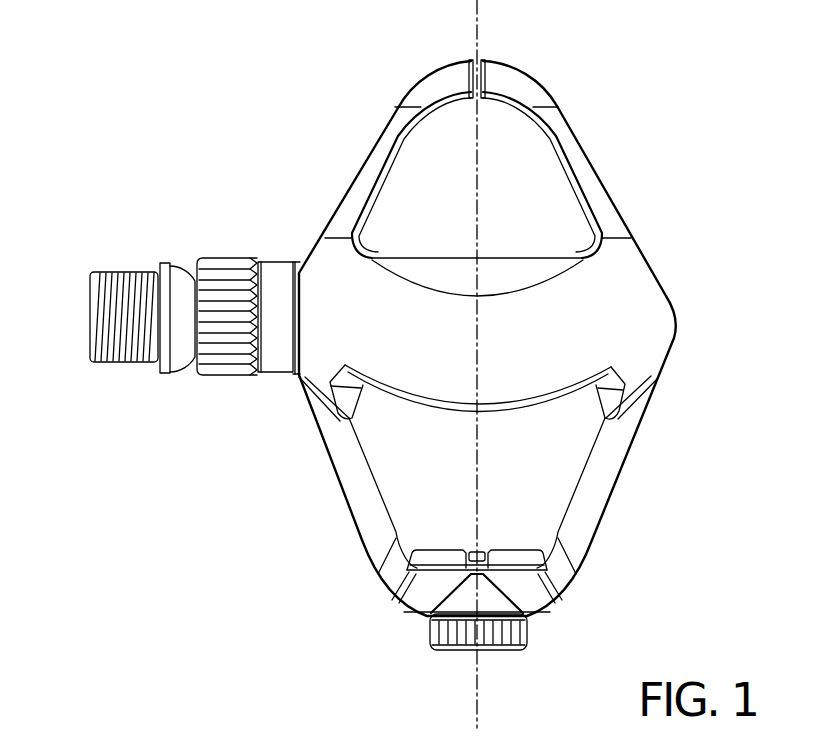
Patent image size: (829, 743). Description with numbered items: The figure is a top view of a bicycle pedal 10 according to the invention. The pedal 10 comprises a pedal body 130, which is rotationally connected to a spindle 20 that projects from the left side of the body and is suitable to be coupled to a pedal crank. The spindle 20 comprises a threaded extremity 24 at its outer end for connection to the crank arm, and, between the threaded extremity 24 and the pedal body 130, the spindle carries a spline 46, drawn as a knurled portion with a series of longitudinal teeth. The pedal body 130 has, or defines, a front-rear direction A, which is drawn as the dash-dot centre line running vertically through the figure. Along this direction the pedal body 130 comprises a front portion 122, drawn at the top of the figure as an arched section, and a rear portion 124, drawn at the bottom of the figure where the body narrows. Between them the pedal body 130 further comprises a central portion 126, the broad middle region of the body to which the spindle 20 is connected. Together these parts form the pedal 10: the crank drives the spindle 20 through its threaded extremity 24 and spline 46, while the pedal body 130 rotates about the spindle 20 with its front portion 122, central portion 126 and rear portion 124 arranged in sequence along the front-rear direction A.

The bicycle pedal 10 is at (656, 187).
The spindle 20 is at (178, 300).
The threaded extremity 24 is at (112, 362).
The spline 46 is at (227, 334).
The front portion 122 is at (508, 85).
The rear portion 124 is at (537, 597).
The central portion 126 is at (610, 323).
The pedal body 130 is at (610, 435).
The front-rear direction A is at (476, 32).